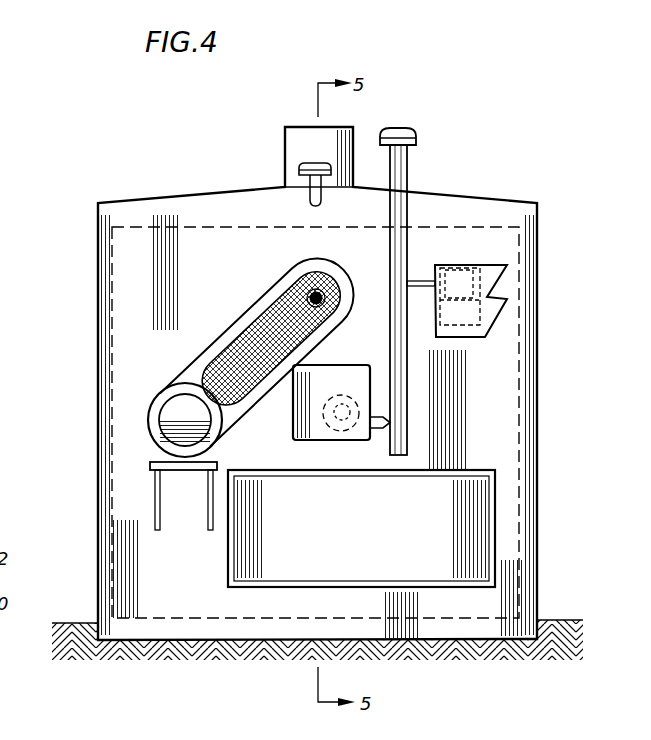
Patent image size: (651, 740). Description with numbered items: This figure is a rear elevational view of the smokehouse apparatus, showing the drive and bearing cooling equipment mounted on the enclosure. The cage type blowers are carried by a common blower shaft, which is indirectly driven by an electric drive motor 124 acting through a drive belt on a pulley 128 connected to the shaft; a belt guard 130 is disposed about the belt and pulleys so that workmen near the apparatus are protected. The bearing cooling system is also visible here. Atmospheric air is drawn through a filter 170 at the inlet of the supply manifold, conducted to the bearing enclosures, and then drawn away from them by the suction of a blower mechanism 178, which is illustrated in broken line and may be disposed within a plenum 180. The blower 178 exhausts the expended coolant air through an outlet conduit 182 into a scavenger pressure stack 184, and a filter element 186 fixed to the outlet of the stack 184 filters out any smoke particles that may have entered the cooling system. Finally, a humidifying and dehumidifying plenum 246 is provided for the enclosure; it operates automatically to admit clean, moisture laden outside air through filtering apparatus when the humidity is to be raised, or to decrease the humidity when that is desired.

The electric drive motor 124 is at (158, 400).
The pulley 128 is at (183, 352).
The belt guard 130 is at (223, 340).
The filter 170 is at (302, 161).
The blower mechanism 178 is at (345, 428).
The plenum 180 is at (358, 382).
The outlet conduit 182 is at (382, 432).
The scavenger pressure stack 184 is at (407, 250).
The filter element 186 is at (402, 129).
The humidifying and dehumidifying plenum 246 is at (492, 278).